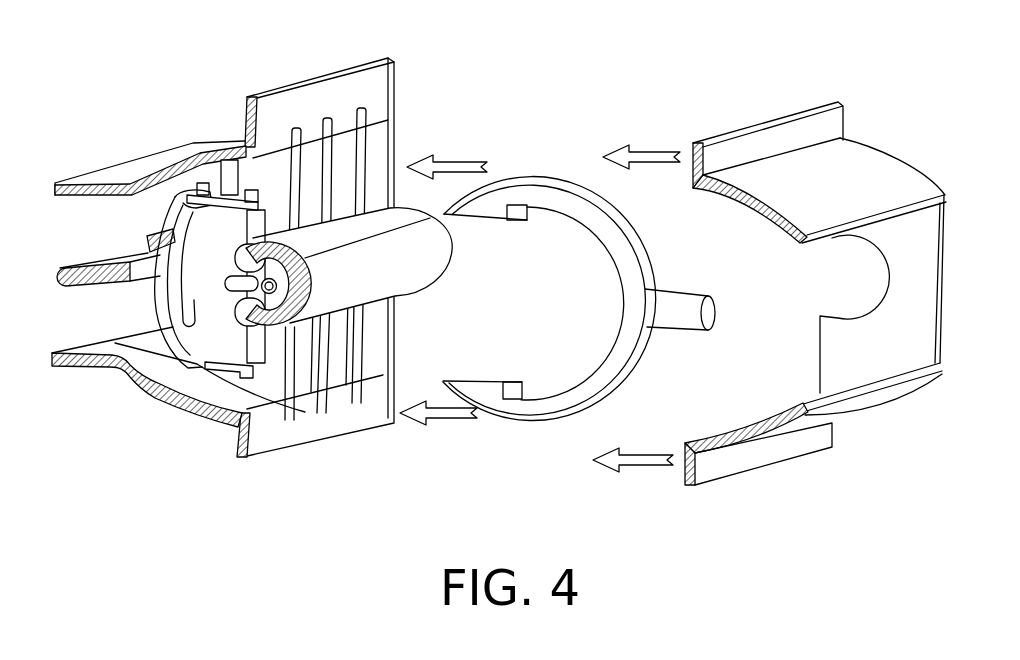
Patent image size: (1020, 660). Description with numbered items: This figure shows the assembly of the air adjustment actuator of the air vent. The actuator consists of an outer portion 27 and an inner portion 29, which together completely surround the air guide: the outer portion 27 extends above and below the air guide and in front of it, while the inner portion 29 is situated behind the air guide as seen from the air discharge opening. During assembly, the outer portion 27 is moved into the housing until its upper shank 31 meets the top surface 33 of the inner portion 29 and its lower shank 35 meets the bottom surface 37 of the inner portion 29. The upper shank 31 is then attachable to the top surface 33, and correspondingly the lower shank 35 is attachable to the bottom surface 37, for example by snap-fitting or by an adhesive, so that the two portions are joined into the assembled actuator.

The outer portion 27 is at (573, 308).
The inner portion 29 is at (222, 333).
The upper shank 31 is at (490, 207).
The top surface 33 is at (236, 185).
The lower shank 35 is at (488, 392).
The bottom surface 37 is at (226, 384).